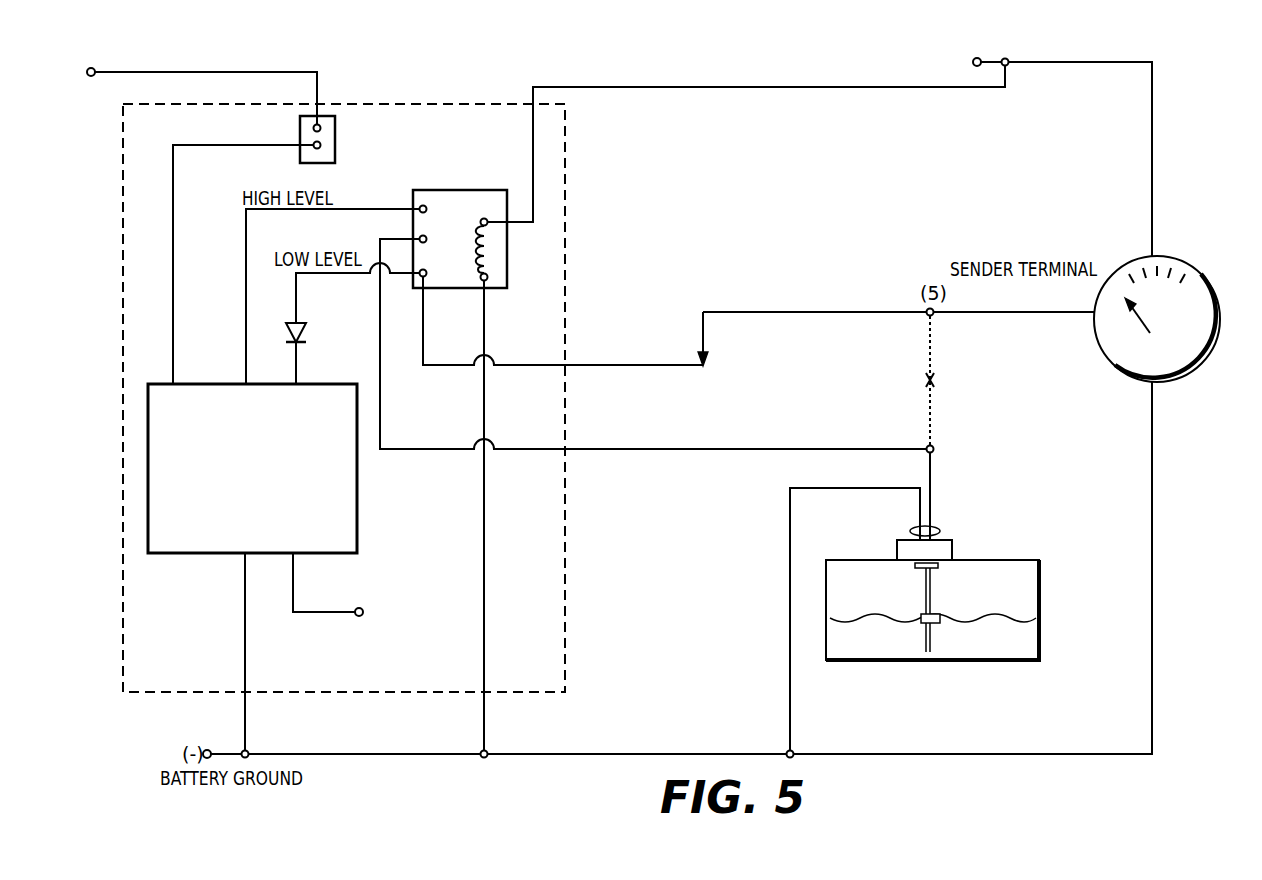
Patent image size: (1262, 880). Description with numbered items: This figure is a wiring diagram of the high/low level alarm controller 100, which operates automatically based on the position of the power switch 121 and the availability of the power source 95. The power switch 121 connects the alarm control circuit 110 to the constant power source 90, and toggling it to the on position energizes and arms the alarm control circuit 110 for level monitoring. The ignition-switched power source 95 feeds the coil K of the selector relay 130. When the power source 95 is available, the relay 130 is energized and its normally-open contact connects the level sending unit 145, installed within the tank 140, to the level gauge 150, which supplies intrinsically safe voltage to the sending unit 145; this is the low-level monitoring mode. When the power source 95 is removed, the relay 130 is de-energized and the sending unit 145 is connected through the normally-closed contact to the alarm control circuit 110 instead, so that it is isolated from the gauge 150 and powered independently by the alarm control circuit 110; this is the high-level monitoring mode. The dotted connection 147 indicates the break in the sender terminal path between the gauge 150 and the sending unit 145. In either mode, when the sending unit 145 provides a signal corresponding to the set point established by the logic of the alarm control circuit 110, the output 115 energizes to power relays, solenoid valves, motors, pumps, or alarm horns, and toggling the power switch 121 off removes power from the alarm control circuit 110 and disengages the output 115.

The power source 90 is at (243, 82).
The power source 95 is at (1071, 143).
The high/low level alarm controller 100 is at (566, 235).
The alarm control circuit 110 is at (232, 474).
The output 115 is at (345, 588).
The power switch 121 is at (338, 148).
The relay 130 is at (507, 270).
The tank 140 is at (1040, 600).
The level sending unit 145 is at (1000, 522).
The sender wire break 147 is at (948, 381).
The level gauge 150 is at (1187, 258).